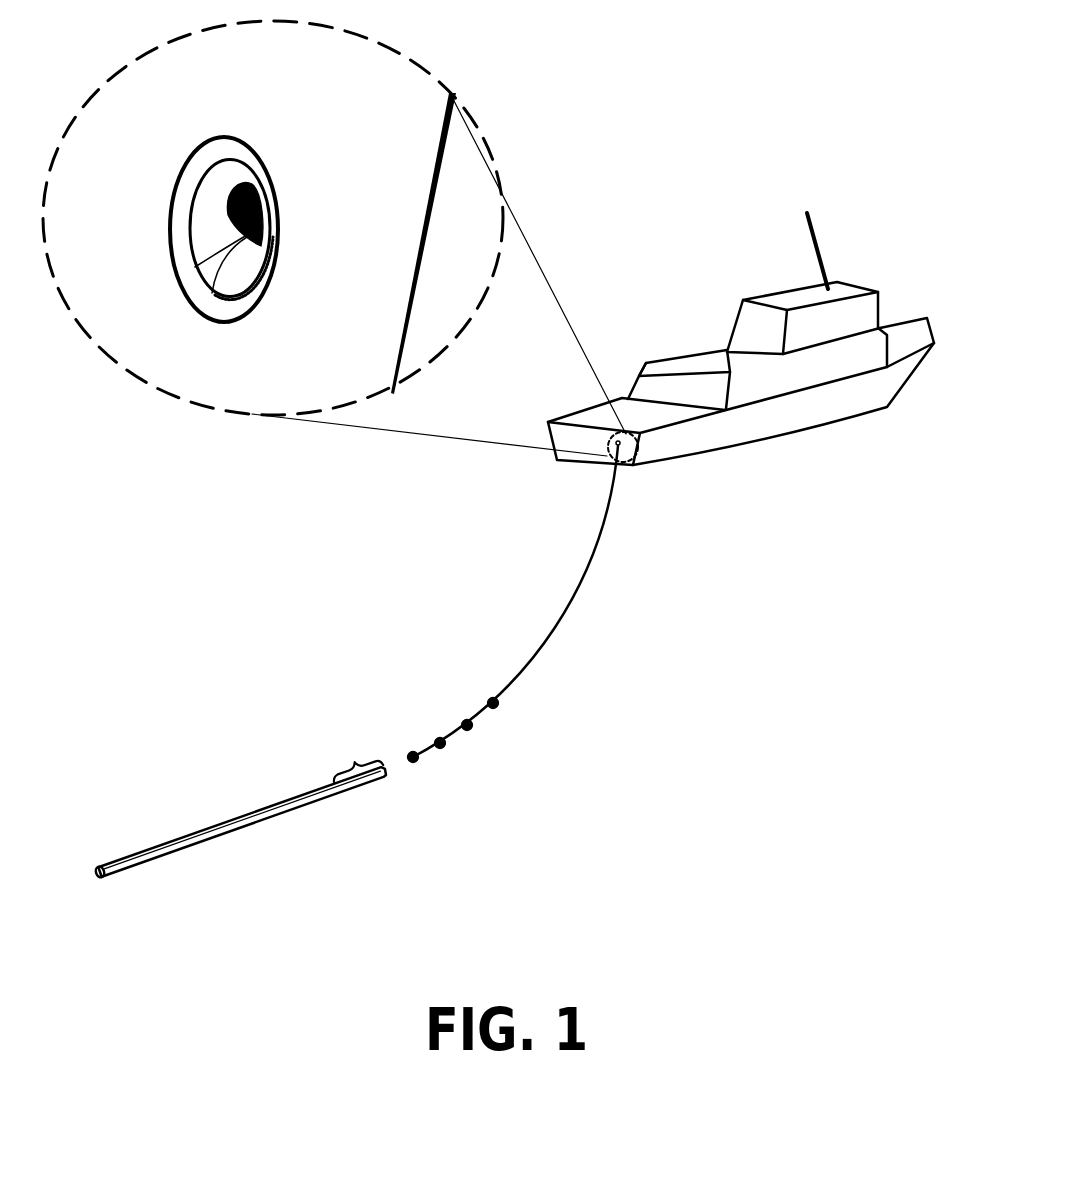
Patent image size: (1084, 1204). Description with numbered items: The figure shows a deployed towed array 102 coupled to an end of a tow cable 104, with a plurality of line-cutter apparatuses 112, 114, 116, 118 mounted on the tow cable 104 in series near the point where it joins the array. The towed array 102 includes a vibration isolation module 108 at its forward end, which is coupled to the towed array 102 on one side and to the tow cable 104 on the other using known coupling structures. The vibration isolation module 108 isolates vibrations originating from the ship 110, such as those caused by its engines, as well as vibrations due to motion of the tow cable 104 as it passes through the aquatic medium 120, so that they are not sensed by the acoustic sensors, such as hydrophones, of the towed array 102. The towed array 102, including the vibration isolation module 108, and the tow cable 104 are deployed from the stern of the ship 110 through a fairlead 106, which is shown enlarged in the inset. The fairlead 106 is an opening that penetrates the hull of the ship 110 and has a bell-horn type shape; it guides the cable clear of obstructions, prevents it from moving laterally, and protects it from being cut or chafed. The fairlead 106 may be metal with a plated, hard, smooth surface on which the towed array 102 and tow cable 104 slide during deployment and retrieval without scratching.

The towed array 102 is at (242, 817).
The tow cable 104 is at (577, 583).
The fairlead 106 is at (204, 171).
The vibration isolation module 108 is at (355, 753).
The ship 110 is at (905, 262).
The line-cutter apparatus 112 is at (415, 761).
The line-cutter apparatus 114 is at (437, 740).
The line-cutter apparatus 116 is at (470, 729).
The line-cutter apparatus 118 is at (490, 700).
The aquatic medium 120 is at (698, 672).